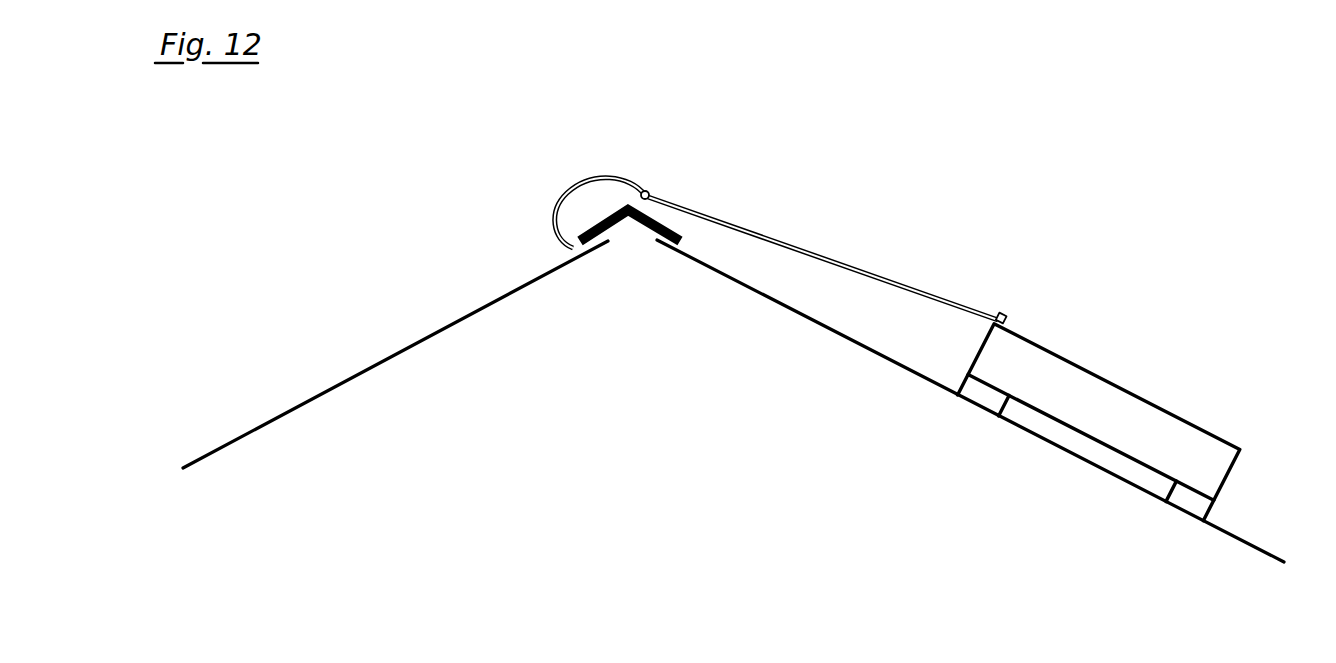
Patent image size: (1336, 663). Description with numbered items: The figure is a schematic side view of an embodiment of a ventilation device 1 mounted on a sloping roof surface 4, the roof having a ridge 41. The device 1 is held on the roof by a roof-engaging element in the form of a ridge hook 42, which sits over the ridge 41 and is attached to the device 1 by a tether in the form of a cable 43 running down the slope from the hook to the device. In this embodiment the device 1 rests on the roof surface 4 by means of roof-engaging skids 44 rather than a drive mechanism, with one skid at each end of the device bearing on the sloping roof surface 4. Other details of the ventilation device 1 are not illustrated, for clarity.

The ventilation device 1 is at (1071, 336).
The sloping roof surface 4 is at (318, 390).
The ridge 41 is at (640, 232).
The ridge hook 42 is at (587, 180).
The cable 43 is at (762, 222).
The roof-engaging skids 44 is at (975, 393).